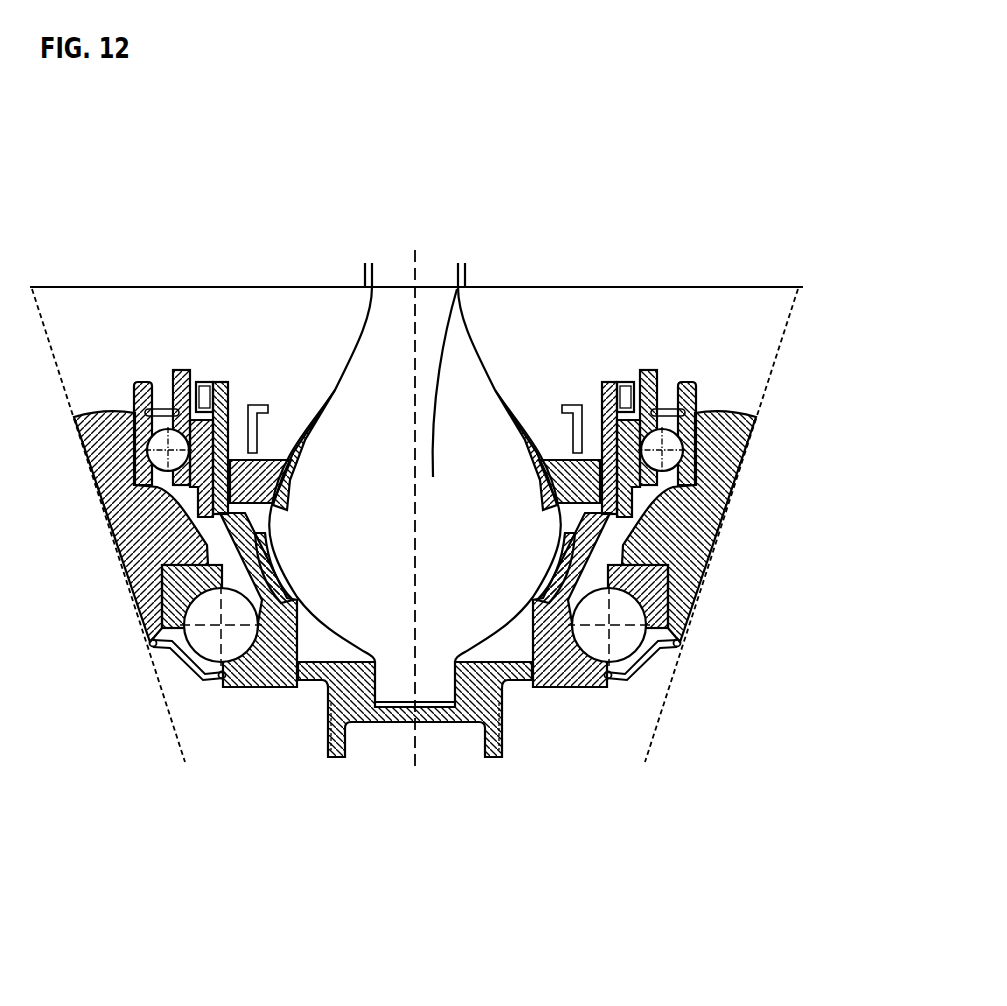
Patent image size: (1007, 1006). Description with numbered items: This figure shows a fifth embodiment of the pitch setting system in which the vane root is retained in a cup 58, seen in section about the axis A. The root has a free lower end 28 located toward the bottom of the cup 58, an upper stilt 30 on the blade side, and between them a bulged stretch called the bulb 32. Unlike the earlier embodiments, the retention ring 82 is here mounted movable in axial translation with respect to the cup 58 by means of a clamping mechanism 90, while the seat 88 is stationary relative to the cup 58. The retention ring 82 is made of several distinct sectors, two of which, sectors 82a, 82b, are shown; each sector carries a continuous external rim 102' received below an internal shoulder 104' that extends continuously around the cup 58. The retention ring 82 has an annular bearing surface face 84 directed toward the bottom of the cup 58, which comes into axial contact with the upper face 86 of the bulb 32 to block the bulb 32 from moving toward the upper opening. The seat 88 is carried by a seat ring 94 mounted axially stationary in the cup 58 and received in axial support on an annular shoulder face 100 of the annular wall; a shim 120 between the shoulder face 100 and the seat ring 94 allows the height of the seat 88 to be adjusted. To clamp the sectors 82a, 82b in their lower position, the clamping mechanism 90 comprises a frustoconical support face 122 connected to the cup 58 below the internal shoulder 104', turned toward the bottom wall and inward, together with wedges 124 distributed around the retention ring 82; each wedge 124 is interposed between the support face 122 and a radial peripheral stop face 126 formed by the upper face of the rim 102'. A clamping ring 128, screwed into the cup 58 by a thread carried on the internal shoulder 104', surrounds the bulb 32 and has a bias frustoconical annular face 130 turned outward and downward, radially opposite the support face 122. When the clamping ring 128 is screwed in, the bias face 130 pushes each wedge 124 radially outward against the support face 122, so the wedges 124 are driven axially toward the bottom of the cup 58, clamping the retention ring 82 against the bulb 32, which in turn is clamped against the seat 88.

The free lower end 28 is at (399, 688).
The upper stilt 30 is at (405, 287).
The bulb 32 is at (465, 287).
The cup 58 is at (680, 540).
The retention ring 82 is at (304, 416).
The first sector of the retention ring 82a is at (312, 395).
The second sector of the retention ring 82b is at (530, 430).
The annular bearing surface face 84 is at (307, 450).
The upper face of the bulb 86 is at (290, 460).
The lower seat 88 is at (275, 568).
The clamping mechanism 90 is at (222, 428).
The seat ring 94 is at (226, 676).
The annular shoulder face 100 is at (589, 690).
The continuous external rim 102' is at (506, 583).
The internal shoulder 104' is at (457, 420).
The shim 120 is at (297, 680).
The frustoconical support face 122 is at (133, 483).
The wedge 124 is at (222, 427).
The radial peripheral stop face 126 is at (581, 450).
The clamping ring 128 is at (290, 453).
The bias frustoconical annular face 130 is at (160, 565).
The rotation axis A is at (418, 742).